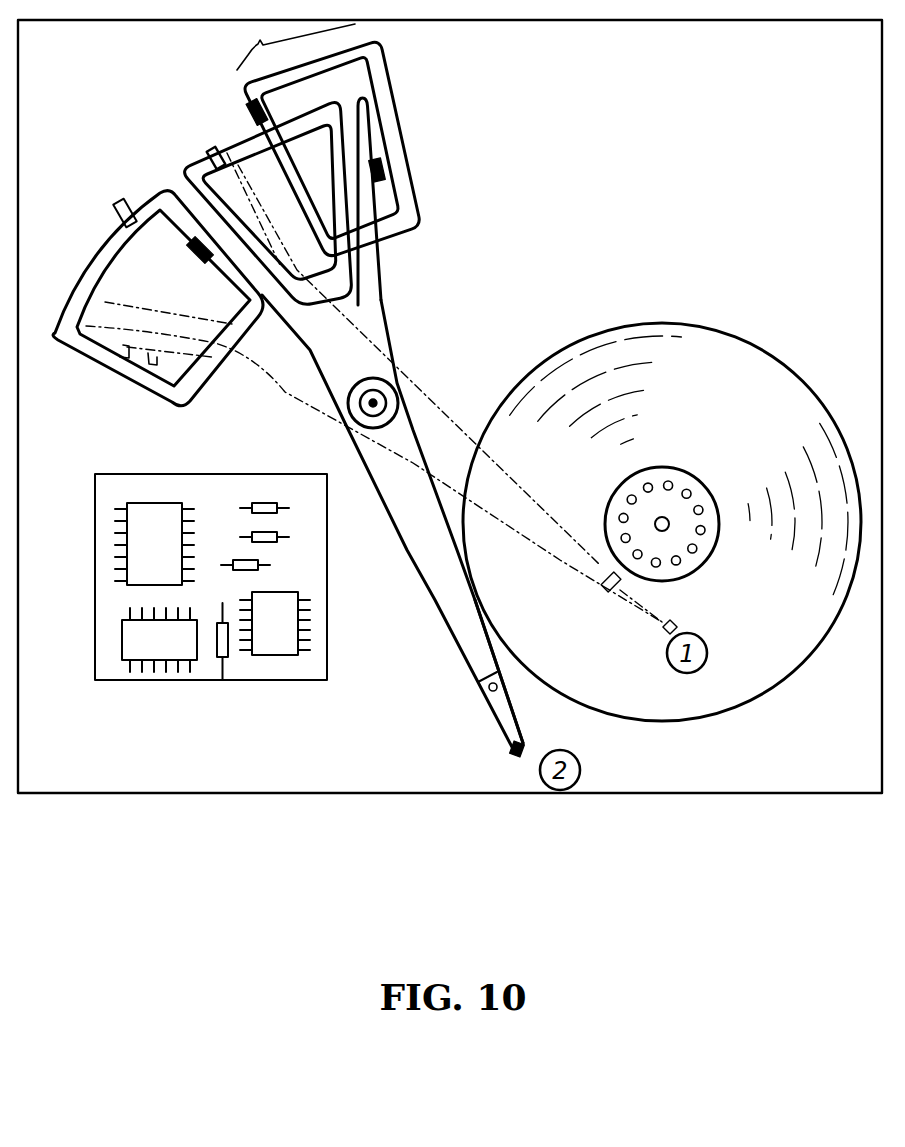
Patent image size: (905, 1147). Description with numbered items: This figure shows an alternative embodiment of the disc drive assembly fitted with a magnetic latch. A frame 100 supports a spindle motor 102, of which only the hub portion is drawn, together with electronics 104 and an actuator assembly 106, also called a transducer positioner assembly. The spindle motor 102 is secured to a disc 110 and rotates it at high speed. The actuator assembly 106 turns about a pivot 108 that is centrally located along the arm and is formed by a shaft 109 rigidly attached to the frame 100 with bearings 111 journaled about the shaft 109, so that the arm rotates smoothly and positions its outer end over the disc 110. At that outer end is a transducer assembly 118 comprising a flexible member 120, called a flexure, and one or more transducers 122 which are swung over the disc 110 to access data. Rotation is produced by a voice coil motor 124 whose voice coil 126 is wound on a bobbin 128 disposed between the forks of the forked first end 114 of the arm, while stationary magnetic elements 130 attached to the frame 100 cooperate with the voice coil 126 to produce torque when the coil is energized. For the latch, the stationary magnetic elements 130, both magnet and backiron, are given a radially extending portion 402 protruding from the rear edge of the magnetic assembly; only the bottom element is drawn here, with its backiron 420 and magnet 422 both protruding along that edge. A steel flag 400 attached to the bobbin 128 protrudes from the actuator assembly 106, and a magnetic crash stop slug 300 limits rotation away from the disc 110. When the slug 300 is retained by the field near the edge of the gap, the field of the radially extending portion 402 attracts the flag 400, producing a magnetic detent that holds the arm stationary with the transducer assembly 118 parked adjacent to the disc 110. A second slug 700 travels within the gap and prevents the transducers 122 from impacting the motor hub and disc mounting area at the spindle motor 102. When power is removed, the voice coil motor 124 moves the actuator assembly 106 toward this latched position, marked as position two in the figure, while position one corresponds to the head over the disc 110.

The frame 100 is at (832, 766).
The spindle motor 102 is at (667, 468).
The electronics 104 is at (223, 680).
The actuator assembly 106 is at (427, 442).
The pivot 108 is at (393, 442).
The shaft 109 is at (378, 396).
The disc 110 is at (760, 617).
The bearings 111 is at (395, 388).
The forked first end 114 is at (347, 310).
The transducer assembly 118 is at (480, 698).
The flexible member 120 is at (502, 717).
The transducers 122 is at (513, 750).
The voice coil motor 124 is at (357, 329).
The voice coil 126 is at (185, 167).
The bobbin 128 is at (270, 193).
The stationary magnetic elements 130 is at (137, 383).
The slug 300 is at (377, 177).
The flag 400 is at (308, 140).
The radially extending portion 402 is at (279, 47).
The backiron 420 is at (397, 115).
The magnet 422 is at (360, 70).
The slug 700 is at (203, 265).